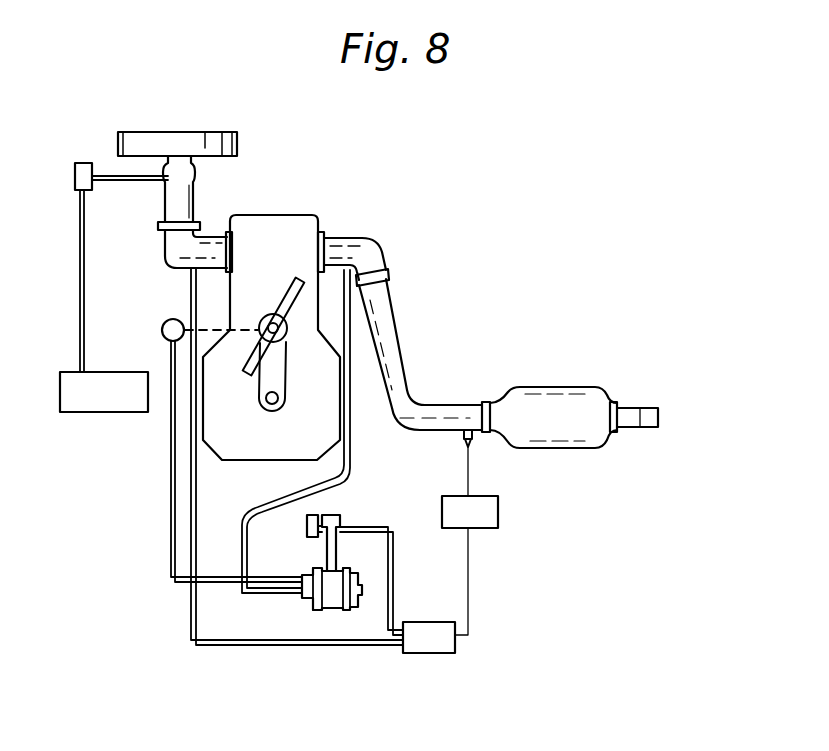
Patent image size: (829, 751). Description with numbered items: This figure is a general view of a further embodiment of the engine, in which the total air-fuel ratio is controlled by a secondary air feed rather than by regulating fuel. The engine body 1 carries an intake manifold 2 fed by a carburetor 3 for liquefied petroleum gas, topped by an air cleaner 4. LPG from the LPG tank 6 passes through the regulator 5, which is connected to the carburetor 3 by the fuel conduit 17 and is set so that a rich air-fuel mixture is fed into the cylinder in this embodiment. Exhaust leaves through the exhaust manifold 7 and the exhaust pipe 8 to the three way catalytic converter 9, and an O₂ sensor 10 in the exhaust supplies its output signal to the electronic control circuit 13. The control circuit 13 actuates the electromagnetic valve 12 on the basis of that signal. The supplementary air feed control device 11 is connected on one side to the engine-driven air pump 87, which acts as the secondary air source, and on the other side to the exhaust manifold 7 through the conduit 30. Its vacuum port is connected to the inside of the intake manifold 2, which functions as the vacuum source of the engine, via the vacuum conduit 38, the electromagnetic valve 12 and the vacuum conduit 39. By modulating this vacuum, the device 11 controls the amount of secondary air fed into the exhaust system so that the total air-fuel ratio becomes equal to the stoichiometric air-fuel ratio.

The engine body 1 is at (318, 348).
The intake manifold 2 is at (167, 258).
The carburetor 3 is at (196, 176).
The air cleaner 4 is at (146, 138).
The regulator 5 is at (75, 178).
The LPG tank 6 is at (62, 388).
The exhaust manifold 7 is at (345, 243).
The exhaust pipe 8 is at (392, 372).
The three way catalytic converter 9 is at (588, 432).
The O₂ sensor 10 is at (465, 437).
The supplementary air feed control device 11 is at (333, 602).
The electromagnetic valve 12 is at (455, 643).
The electronic control circuit 13 is at (492, 515).
The fuel conduit 17 is at (121, 181).
The conduit 30 is at (257, 594).
The vacuum conduit 38 is at (394, 556).
The vacuum conduit 39 is at (218, 648).
The air pump 87 is at (161, 330).